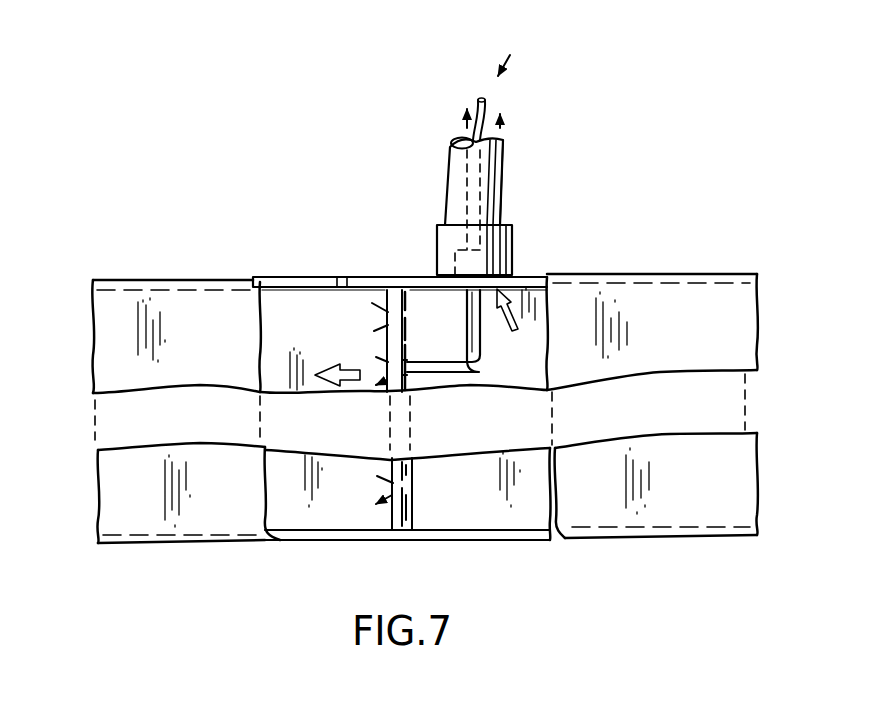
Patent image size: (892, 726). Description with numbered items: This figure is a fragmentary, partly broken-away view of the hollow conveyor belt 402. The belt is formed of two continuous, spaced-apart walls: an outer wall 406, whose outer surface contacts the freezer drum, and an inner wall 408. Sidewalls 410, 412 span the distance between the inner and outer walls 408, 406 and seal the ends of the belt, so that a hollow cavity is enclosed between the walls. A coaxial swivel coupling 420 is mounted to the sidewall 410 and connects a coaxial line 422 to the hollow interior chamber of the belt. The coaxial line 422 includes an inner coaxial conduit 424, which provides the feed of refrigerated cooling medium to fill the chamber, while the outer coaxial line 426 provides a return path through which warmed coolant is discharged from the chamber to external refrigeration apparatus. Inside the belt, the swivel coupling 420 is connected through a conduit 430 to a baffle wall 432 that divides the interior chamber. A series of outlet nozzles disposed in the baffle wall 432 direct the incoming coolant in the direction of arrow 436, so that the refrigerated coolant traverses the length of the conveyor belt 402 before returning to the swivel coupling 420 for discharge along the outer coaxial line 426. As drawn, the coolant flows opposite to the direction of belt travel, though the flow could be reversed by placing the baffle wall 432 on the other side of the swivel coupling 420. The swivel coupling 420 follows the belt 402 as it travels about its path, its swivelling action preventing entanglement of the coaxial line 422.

The hollow conveyor belt 402 is at (487, 518).
The outer wall 406 is at (193, 305).
The inner wall 408 is at (325, 515).
The sidewall 410 is at (295, 284).
The sidewall 412 is at (375, 537).
The coaxial swivel coupling 420 is at (518, 220).
The coaxial line 422 is at (512, 149).
The inner coaxial conduit 424 is at (497, 97).
The outer coaxial line 426 is at (452, 175).
The conduit 430 is at (480, 368).
The baffle wall 432 is at (410, 507).
The arrow 436 is at (350, 370).